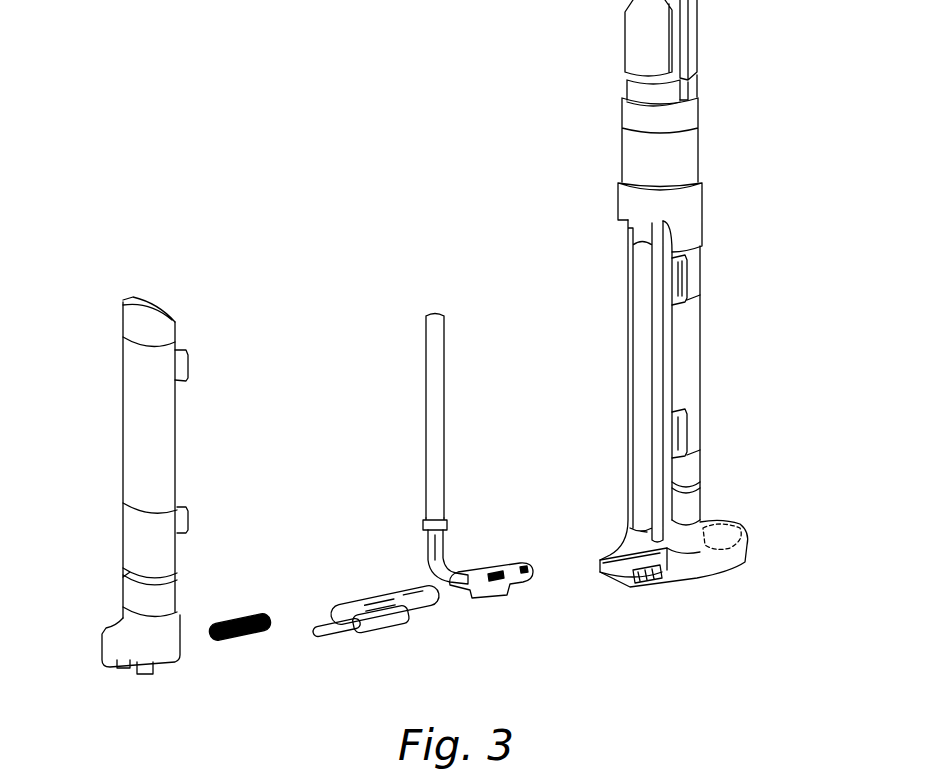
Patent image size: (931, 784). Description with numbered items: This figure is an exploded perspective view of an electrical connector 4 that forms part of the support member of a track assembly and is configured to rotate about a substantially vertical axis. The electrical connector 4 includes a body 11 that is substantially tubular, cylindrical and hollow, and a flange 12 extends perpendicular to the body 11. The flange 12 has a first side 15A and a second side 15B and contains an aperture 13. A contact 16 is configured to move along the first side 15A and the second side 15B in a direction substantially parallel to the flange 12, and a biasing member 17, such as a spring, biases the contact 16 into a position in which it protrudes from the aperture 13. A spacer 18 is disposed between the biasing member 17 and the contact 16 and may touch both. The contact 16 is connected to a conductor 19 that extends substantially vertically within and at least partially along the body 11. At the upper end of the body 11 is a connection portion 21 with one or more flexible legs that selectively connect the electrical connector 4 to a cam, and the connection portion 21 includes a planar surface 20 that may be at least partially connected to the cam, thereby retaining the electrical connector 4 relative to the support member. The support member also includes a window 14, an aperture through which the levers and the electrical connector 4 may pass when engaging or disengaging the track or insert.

The electrical connector 4 is at (707, 405).
The body 11 is at (687, 205).
The flange 12 is at (733, 577).
The aperture 13 is at (743, 530).
The window 14 is at (115, 422).
The first side 15A is at (640, 547).
The second side 15B is at (658, 577).
The contact 16 is at (510, 590).
The biasing member 17 is at (233, 643).
The spacer 18 is at (400, 620).
The conductor 19 is at (433, 412).
The planar surface 20 is at (692, 84).
The connection portion 21 is at (690, 32).